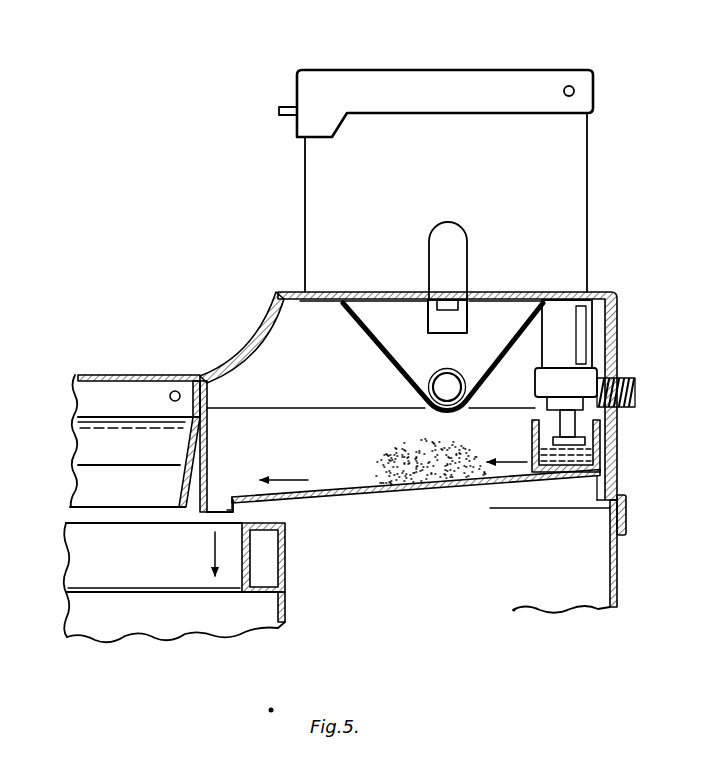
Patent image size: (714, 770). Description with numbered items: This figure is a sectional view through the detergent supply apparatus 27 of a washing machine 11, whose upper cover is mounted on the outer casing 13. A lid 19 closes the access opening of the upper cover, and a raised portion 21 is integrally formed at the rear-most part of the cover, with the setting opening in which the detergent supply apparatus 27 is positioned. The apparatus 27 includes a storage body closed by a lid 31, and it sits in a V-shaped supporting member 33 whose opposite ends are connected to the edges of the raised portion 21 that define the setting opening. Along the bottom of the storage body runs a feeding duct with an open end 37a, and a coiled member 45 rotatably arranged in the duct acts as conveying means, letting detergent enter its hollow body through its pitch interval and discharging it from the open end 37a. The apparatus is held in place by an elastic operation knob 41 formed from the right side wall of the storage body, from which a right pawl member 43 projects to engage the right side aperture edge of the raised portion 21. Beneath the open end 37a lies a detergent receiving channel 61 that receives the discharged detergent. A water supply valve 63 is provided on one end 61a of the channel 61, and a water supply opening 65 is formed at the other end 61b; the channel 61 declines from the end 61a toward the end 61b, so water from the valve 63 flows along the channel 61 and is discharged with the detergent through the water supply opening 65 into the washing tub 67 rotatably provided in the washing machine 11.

The washing machine 11 is at (632, 521).
The outer casing 13 is at (620, 597).
The lid 19 is at (146, 375).
The raised portion 21 is at (600, 292).
The detergent supply apparatus 27 is at (304, 174).
The lid 31 is at (461, 69).
The V-shaped supporting member 33 is at (365, 343).
The open end of feeding duct 37a is at (450, 392).
The elastic operation knob 41 is at (465, 242).
The right pawl member 43 is at (458, 318).
The coiled member 45 is at (440, 372).
The detergent receiving channel 61 is at (463, 485).
The one end of detergent receiving channel 61a is at (585, 478).
The other end of detergent receiving channel 61b is at (238, 502).
The water supply valve 63 is at (587, 375).
The water supply opening 65 is at (215, 508).
The washing tub 67 is at (230, 561).